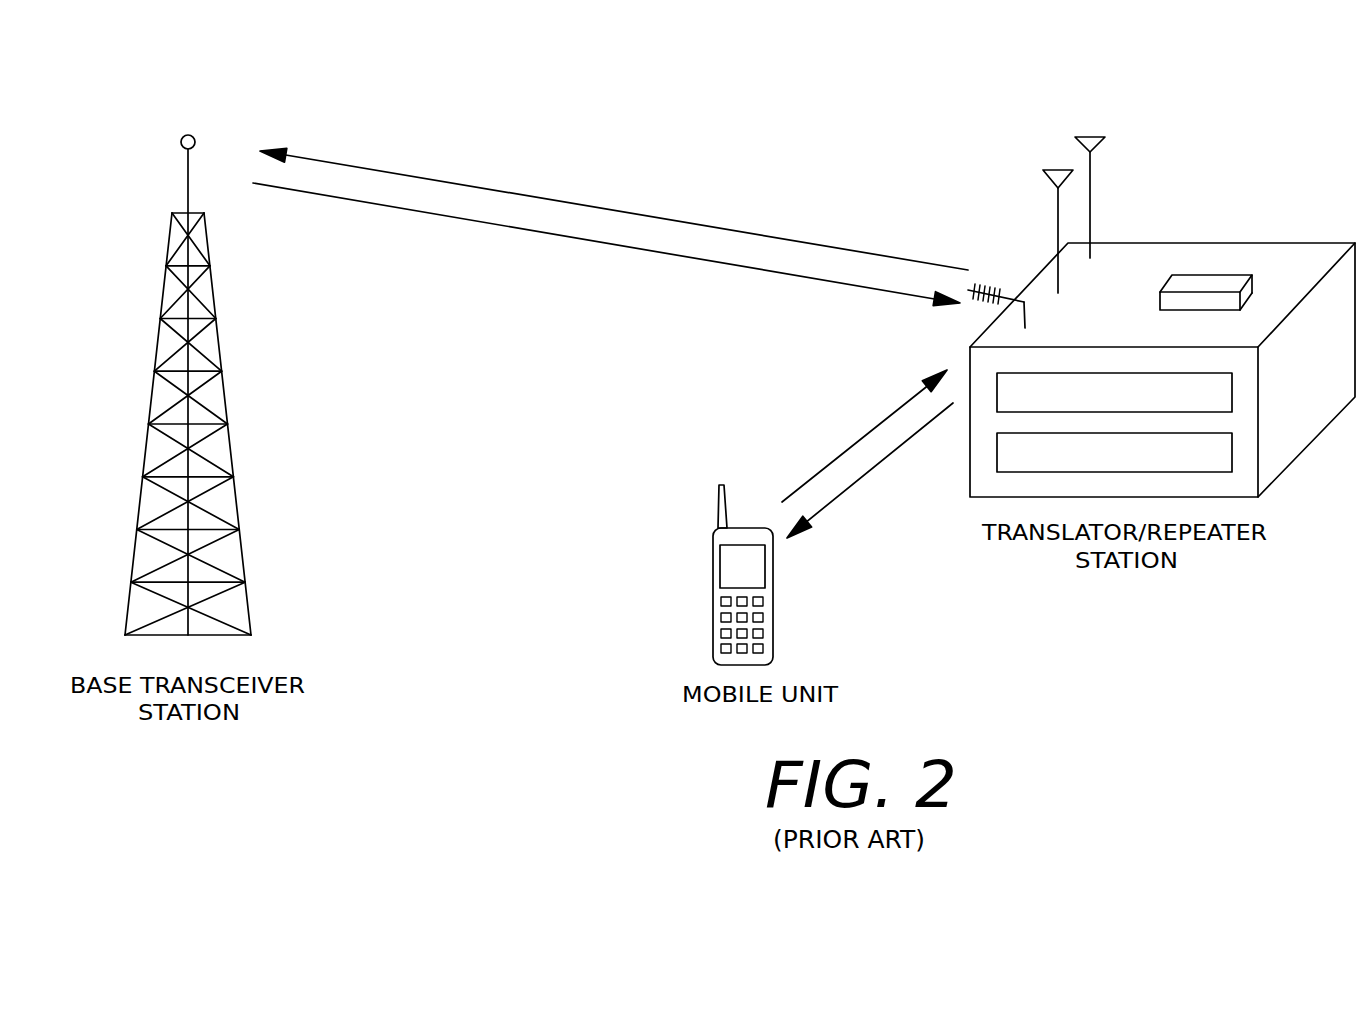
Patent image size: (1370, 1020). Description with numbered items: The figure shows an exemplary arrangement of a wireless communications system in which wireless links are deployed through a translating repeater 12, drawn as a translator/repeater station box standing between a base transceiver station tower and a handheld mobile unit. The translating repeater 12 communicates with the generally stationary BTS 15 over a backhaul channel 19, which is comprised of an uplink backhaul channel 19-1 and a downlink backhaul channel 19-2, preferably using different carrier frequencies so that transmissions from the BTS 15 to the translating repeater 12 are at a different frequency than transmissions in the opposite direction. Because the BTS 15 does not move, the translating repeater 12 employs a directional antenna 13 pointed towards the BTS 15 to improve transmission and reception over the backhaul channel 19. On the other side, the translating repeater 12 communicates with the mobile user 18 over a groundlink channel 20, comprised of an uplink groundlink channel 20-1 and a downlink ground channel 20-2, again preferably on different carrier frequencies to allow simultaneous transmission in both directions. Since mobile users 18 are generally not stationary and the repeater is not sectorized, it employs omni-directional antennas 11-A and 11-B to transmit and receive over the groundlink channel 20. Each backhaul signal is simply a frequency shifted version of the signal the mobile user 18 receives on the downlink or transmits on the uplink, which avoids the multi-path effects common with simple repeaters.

The omni-directional antenna 11-A is at (1045, 170).
The omni-directional antenna 11-B is at (1083, 137).
The translating repeater 12 is at (1180, 242).
The directional antenna 13 is at (992, 285).
The BTS 15 is at (233, 448).
The mobile user 18 is at (713, 590).
The backhaul channel 19 is at (610, 215).
The uplink backhaul channel 19-1 is at (743, 230).
The downlink backhaul channel 19-2 is at (700, 257).
The groundlink channel 20 is at (850, 476).
The uplink groundlink channel 20-1 is at (870, 428).
The downlink ground channel 20-2 is at (847, 493).